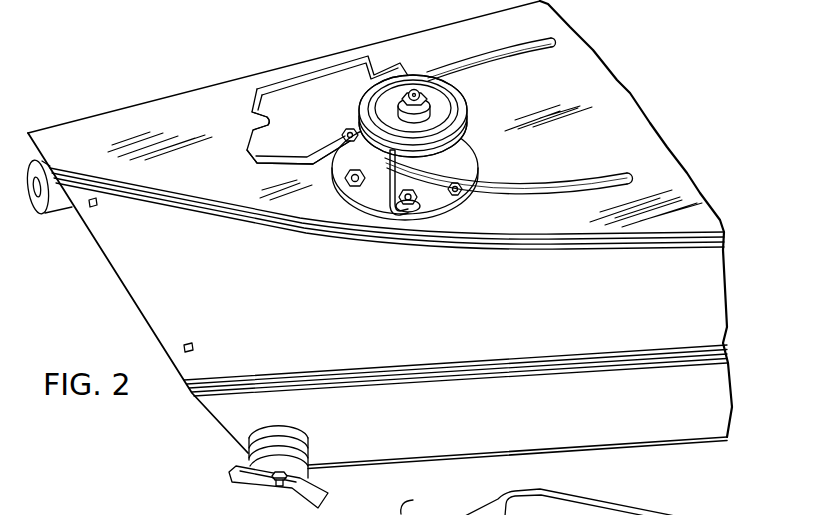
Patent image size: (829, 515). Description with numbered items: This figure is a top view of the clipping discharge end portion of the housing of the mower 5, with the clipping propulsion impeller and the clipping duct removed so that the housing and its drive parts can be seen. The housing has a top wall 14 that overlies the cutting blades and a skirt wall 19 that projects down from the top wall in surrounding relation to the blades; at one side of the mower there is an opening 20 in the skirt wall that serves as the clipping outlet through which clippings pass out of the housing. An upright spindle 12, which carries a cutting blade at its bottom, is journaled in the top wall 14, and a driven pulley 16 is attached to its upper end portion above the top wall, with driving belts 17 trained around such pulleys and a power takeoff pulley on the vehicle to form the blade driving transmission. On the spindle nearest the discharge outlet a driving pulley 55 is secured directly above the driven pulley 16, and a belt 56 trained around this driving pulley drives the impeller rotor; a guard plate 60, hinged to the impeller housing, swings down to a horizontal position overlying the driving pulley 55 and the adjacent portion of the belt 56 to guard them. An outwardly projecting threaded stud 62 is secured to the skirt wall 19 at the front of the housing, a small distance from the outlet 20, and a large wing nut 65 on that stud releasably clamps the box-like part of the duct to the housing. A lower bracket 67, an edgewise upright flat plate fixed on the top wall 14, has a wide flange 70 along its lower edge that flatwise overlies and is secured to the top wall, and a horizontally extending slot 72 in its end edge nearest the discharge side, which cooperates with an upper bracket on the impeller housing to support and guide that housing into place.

The mower 5 is at (96, 271).
The spindle 12 is at (419, 121).
The top wall 14 is at (611, 162).
The driven pulley 16 is at (469, 167).
The driving belt 17 is at (521, 43).
The skirt wall 19 is at (427, 430).
The opening 20 is at (139, 328).
The driving pulley 55 is at (417, 76).
The belt 56 is at (423, 500).
The guard plate 60 is at (609, 514).
The threaded stud 62 is at (281, 485).
The wing nut 65 is at (237, 471).
The lower bracket 67 is at (294, 87).
The flange 70 is at (275, 158).
The slot 72 is at (256, 121).